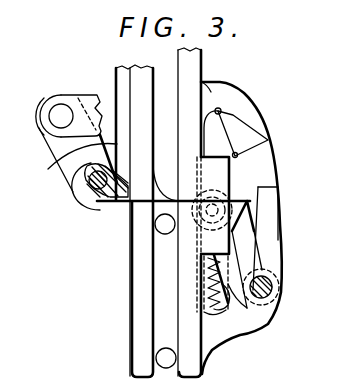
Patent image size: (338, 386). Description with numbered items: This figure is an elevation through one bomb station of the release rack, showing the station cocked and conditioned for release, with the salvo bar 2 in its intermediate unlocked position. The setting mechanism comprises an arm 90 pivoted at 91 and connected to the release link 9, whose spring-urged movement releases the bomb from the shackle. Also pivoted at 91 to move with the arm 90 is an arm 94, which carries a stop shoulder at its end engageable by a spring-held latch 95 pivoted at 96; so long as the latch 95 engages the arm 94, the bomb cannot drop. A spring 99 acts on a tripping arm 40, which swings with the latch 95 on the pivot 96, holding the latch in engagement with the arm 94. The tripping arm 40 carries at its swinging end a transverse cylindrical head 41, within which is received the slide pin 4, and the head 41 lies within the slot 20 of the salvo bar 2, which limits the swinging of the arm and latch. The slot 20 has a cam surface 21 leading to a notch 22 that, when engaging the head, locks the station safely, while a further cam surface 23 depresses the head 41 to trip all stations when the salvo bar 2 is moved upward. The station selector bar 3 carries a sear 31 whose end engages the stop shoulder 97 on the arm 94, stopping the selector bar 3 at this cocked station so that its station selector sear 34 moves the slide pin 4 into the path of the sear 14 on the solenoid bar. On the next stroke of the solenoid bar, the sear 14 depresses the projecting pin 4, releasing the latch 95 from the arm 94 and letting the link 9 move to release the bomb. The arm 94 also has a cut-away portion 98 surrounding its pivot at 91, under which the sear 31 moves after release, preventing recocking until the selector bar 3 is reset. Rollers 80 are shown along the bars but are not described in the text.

The salvo bar 2 is at (253, 322).
The station selector bar 3 is at (135, 75).
The slide pin 4 is at (169, 201).
The release link 9 is at (79, 99).
The sear 14 is at (215, 307).
The slot 20 is at (251, 216).
The cam surface 21 is at (268, 138).
The notch 22 is at (221, 110).
The cam surface 23 is at (200, 265).
The sear 31 is at (69, 165).
The station selector sear 34 is at (250, 125).
The tripping arm 40 is at (242, 251).
The cylindrical head 41 is at (276, 174).
The rollers 80 is at (158, 232).
The arm 90 is at (53, 141).
The pivot 91 is at (88, 192).
The arm 94 is at (150, 208).
The latch 95 is at (270, 233).
The pivot 96 is at (272, 283).
The stop shoulder 97 is at (115, 198).
The cut-away portion 98 is at (90, 183).
The spring 99 is at (215, 308).